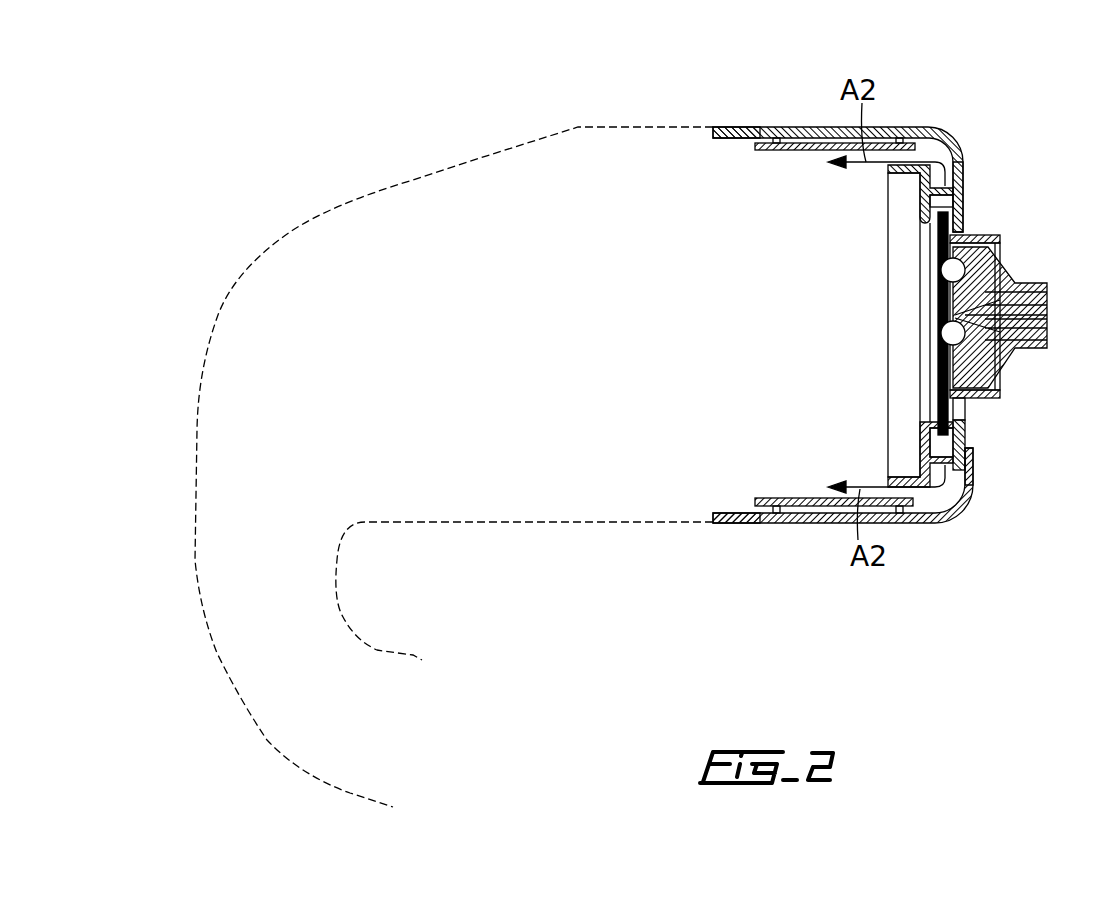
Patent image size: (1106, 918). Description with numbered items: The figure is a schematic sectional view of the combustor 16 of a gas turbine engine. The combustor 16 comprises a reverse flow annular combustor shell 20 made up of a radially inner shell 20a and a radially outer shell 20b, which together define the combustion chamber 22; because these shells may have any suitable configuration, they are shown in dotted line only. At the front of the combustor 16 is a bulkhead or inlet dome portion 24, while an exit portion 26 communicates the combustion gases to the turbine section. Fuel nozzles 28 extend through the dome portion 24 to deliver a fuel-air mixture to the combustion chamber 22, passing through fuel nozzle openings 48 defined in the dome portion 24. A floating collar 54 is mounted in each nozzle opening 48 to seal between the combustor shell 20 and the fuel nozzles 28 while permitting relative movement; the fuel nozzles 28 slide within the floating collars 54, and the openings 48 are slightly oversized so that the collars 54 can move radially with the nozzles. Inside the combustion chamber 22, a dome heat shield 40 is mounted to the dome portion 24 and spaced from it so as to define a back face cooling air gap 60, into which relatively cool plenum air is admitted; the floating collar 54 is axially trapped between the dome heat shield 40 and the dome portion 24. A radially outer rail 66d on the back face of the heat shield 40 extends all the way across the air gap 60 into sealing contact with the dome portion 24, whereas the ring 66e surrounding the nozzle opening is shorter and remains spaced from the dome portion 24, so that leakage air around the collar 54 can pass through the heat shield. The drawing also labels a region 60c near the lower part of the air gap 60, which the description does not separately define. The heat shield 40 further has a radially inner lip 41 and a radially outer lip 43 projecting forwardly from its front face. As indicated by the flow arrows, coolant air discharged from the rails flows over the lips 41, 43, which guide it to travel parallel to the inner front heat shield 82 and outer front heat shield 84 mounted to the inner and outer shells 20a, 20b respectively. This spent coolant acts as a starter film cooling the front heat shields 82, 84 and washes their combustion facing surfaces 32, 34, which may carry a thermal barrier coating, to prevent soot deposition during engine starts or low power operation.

The combustor 16 is at (208, 250).
The combustor shell 20 is at (750, 320).
The radially inner shell 20a is at (633, 541).
The radially outer shell 20b is at (672, 105).
The combustion chamber 22 is at (592, 275).
The dome portion 24 is at (934, 212).
The exit portion 26 is at (385, 742).
The fuel nozzles 28 is at (1030, 262).
The combustion facing surface of inner front heat shield 32 is at (725, 488).
The combustion facing surface of outer front heat shield 34 is at (726, 154).
The dome heat shield 40 is at (900, 193).
The radially inner lip 41 is at (872, 462).
The radially outer lip 43 is at (887, 180).
The fuel nozzle opening 48 is at (982, 413).
The floating collar 54 is at (992, 222).
The air gap 60 is at (942, 448).
The clip leg 60c is at (973, 458).
The radially outer rail 66d is at (963, 193).
The ring 66e is at (965, 425).
The inner front heat shield 82 is at (810, 498).
The outer front heat shield 84 is at (786, 151).